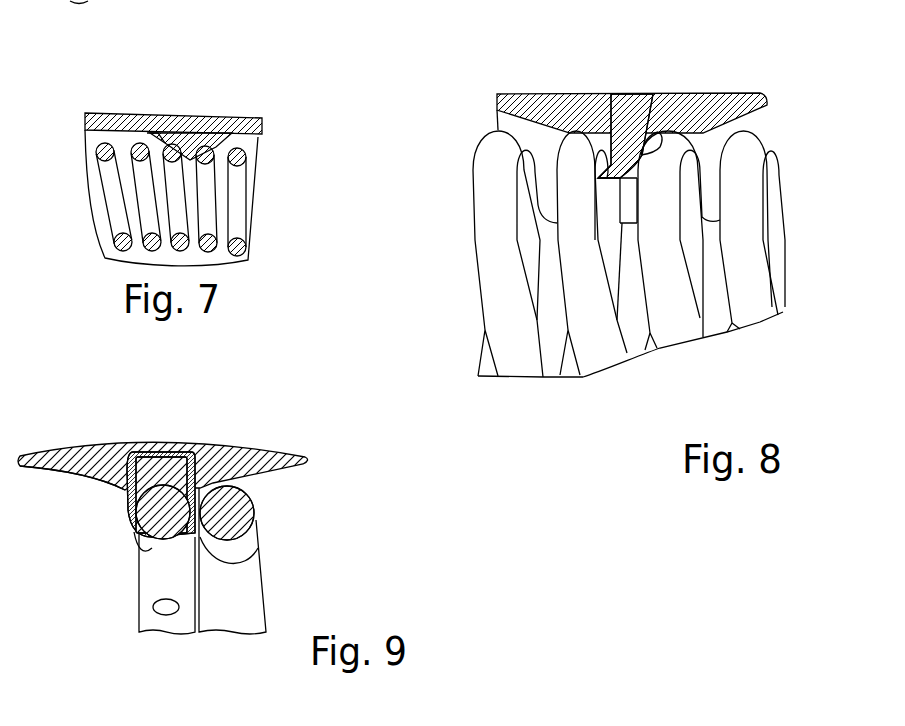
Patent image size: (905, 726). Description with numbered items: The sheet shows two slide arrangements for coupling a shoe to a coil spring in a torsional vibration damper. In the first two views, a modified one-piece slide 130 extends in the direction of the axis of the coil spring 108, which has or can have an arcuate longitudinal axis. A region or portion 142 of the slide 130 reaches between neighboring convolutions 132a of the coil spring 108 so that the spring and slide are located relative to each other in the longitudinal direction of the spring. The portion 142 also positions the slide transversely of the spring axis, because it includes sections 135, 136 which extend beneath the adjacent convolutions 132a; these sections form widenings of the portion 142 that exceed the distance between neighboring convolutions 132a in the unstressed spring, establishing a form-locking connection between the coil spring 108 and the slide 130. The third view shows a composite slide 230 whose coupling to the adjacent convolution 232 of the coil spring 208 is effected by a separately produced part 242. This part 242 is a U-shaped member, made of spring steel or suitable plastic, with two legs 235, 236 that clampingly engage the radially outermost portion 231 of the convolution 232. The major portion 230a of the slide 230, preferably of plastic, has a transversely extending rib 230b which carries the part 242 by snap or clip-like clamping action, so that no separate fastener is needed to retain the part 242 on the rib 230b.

In FIG. 7, the coil spring 108 is at (247, 264).
In FIG. 8, the coil spring 108 is at (785, 170).
In FIG. 7, the slide 130 is at (221, 130).
In FIG. 8, the slide 130 is at (526, 107).
In FIG. 7, the convolutions 132a is at (185, 158).
In FIG. 8, the convolutions 132a is at (592, 290).
In FIG. 7, the portion 135 is at (195, 158).
In FIG. 8, the portion 135 is at (605, 168).
In FIG. 7, the portion 136 is at (192, 162).
In FIG. 8, the portion 136 is at (651, 96).
In FIG. 7, the portion 142 is at (188, 155).
In FIG. 8, the portion 142 is at (611, 92).
In FIG. 9, the coil spring 208 is at (237, 597).
In FIG. 9, the composite slide 230 is at (223, 455).
In FIG. 9, the major portion 230a is at (53, 459).
In FIG. 9, the rib 230b is at (143, 452).
In FIG. 9, the radially outermost portion 231 is at (149, 553).
In FIG. 9, the convolution 232 is at (159, 592).
In FIG. 9, the leg 235 is at (127, 505).
In FIG. 9, the leg 236 is at (200, 536).
In FIG. 9, the separately produced part 242 is at (160, 467).